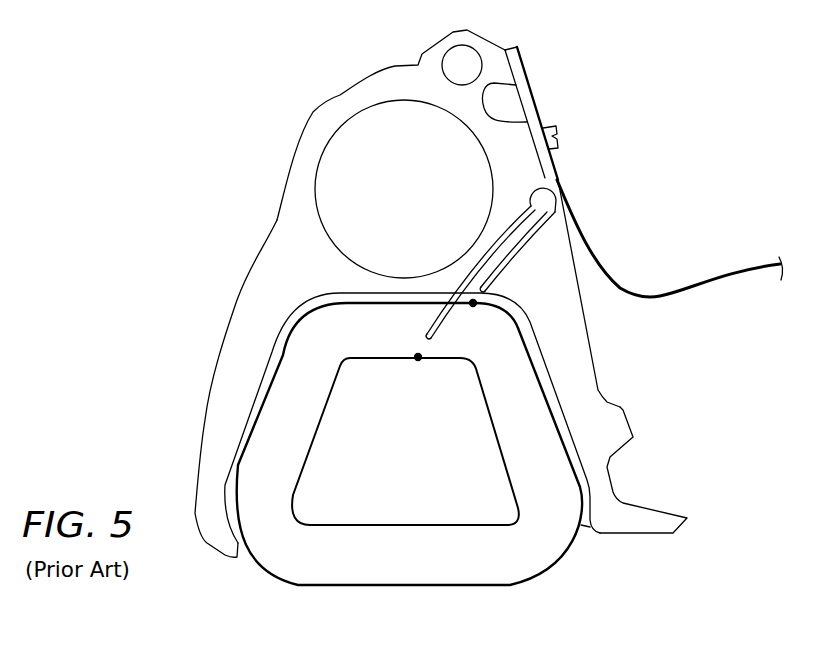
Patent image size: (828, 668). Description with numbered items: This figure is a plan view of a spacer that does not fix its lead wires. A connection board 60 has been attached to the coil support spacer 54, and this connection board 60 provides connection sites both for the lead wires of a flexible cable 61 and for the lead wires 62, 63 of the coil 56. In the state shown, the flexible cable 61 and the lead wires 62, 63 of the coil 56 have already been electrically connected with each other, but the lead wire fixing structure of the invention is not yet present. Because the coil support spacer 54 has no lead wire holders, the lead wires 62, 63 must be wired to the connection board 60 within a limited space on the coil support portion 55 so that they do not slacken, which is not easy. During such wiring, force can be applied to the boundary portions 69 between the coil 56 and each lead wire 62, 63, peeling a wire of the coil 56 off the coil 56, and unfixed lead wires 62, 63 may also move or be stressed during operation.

The coil support spacer 54 is at (272, 77).
The coil support portion 55 is at (238, 302).
The coil 56 is at (410, 587).
The connection board 60 is at (533, 90).
The flexible cable 61 is at (723, 272).
The lead wire 62 is at (522, 257).
The lead wire 63 is at (512, 237).
The boundary portions 69 is at (473, 303).